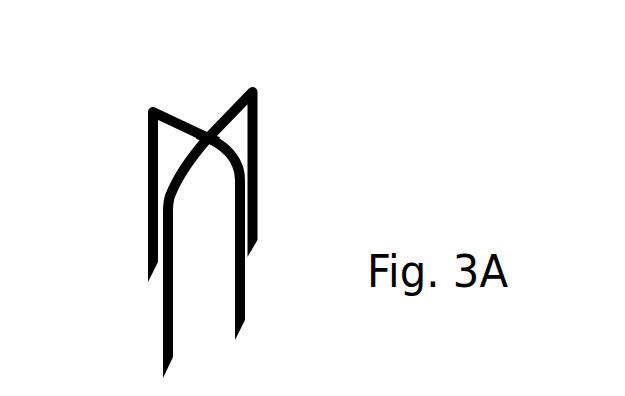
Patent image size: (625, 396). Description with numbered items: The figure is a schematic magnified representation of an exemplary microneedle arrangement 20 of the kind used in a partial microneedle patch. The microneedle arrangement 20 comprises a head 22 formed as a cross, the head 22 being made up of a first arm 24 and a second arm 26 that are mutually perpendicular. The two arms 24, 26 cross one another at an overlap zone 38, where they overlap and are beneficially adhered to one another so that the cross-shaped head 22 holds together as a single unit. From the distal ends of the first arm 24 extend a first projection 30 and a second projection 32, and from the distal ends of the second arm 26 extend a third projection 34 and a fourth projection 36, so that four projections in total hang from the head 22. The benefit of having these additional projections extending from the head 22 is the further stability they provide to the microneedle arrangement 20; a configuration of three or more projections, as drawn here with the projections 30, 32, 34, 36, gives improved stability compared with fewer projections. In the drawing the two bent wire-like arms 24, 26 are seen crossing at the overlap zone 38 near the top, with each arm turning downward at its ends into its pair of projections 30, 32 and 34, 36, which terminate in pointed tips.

The microneedle arrangement 20 is at (295, 119).
The head 22 is at (214, 81).
The first arm 24 is at (164, 134).
The second arm 26 is at (163, 178).
The first projection 30 is at (257, 277).
The second projection 32 is at (136, 247).
The third projection 34 is at (269, 186).
The fourth projection 36 is at (149, 338).
The overlap zone 38 is at (196, 114).